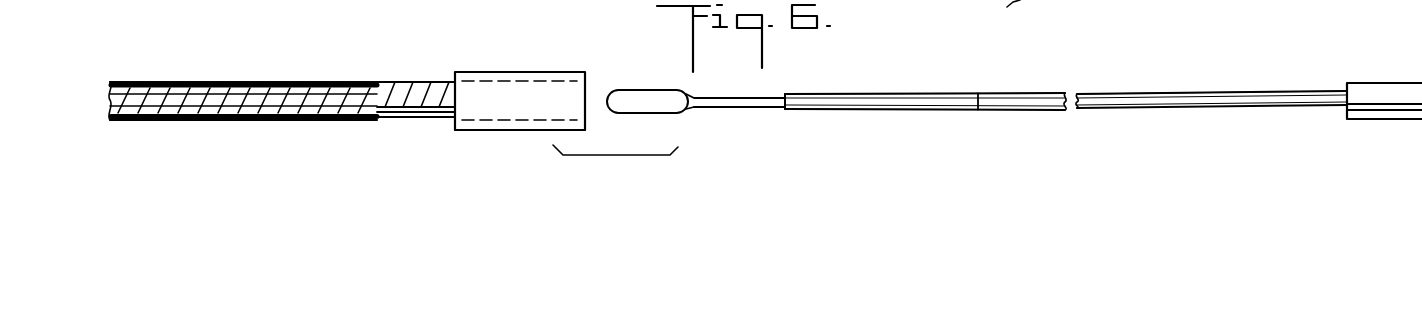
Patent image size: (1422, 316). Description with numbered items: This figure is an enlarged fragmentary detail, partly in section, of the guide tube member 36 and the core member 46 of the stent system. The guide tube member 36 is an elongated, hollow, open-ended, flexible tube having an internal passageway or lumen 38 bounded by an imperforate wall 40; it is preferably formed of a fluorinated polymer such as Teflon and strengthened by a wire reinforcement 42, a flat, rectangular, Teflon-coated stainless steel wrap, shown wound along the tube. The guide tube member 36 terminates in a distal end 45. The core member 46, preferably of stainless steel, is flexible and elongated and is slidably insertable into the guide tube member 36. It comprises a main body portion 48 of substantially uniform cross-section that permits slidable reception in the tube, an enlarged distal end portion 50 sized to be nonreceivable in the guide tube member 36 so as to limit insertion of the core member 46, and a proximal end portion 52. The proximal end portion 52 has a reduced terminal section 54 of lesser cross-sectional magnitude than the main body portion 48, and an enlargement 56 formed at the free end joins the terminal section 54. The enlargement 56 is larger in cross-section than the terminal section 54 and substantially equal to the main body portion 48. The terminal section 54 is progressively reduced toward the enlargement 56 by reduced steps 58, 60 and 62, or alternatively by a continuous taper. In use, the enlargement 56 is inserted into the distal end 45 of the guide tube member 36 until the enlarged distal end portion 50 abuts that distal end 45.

The guide tube member 36 is at (492, 70).
The internal passageway or lumen 38 is at (352, 103).
The imperforate wall 40 is at (470, 132).
The wire reinforcement 42 is at (350, 79).
The distal end 45 is at (571, 70).
The core member 46 is at (1158, 52).
The main body portion 48 is at (1217, 90).
The enlarged distal end portion 50 is at (1397, 82).
The proximal end portion 52 is at (713, 93).
The terminal section 54 is at (1032, 81).
The enlargement 56 is at (648, 89).
The reduced step 58 is at (1003, 108).
The reduced step 60 is at (842, 110).
The reduced step 62 is at (738, 108).